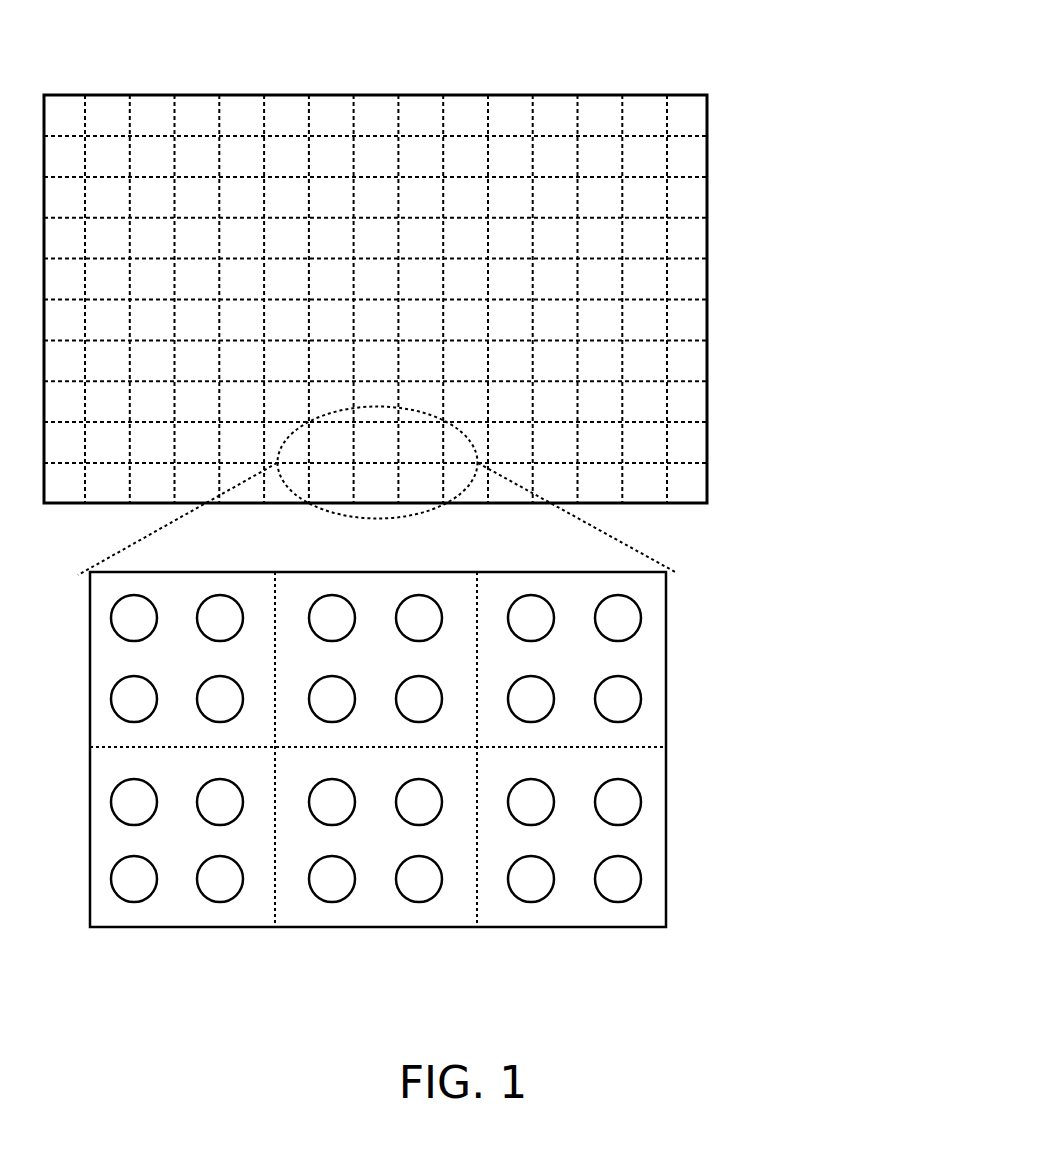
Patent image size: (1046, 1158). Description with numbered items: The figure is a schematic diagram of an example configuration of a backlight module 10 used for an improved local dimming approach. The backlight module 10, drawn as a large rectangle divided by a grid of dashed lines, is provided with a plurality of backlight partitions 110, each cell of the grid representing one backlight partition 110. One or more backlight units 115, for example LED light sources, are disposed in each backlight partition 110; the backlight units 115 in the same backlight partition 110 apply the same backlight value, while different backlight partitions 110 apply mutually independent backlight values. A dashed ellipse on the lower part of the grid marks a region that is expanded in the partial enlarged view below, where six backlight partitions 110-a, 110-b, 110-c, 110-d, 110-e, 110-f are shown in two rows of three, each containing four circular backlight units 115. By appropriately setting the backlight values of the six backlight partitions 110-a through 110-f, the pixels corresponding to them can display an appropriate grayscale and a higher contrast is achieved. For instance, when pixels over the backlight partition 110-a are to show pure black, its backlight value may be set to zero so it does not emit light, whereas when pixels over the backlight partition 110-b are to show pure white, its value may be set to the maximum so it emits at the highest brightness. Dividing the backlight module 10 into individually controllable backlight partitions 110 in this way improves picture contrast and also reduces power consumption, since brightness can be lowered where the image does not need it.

The backlight module 10 is at (375, 254).
The backlight partition 110 is at (654, 633).
The backlight partition 110-a is at (177, 658).
The backlight partition 110-b is at (375, 658).
The backlight partition 110-c is at (574, 658).
The backlight partition 110-d is at (177, 840).
The backlight partition 110-e is at (375, 840).
The backlight partition 110-f is at (574, 840).
The backlight unit 115 is at (621, 803).